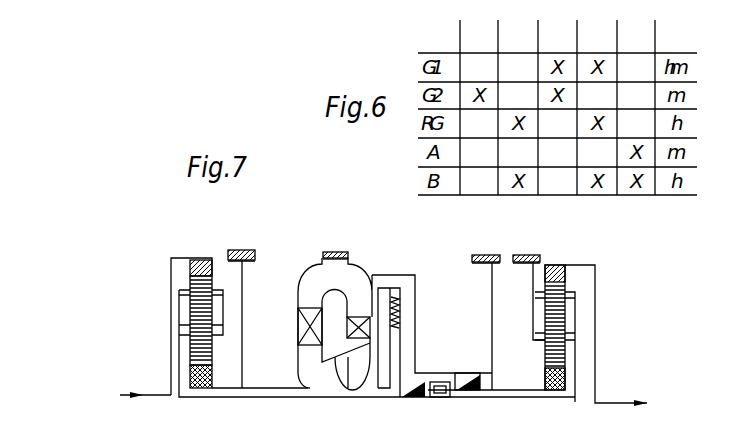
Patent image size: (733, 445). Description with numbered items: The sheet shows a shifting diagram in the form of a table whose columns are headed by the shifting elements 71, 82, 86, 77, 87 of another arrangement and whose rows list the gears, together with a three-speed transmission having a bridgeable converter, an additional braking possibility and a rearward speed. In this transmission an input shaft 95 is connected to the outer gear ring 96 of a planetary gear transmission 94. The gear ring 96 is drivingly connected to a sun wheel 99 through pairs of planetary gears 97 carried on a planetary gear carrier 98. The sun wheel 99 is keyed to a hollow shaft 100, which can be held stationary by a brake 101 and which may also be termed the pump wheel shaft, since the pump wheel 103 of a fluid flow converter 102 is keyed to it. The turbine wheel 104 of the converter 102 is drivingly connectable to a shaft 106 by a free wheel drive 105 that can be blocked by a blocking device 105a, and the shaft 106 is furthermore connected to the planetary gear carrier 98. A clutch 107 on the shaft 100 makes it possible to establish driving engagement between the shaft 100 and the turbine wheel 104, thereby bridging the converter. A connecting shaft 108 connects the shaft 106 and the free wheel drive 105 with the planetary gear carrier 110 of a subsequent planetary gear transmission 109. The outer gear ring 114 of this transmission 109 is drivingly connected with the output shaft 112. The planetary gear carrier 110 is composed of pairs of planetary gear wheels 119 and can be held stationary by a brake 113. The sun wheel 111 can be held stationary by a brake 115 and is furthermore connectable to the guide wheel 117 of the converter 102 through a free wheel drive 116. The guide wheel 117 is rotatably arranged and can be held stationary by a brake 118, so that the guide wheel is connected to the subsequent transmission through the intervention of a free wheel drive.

In FIG. 6, the clutch 71 is at (479, 36).
In FIG. 6, the brake 82 is at (518, 36).
In FIG. 6, the clutch 86 is at (557, 36).
In FIG. 6, the clutch 77 is at (597, 36).
In FIG. 6, the brake 87 is at (636, 36).
In FIG. 7, the planetary gear transmission 94 is at (194, 250).
In FIG. 7, the input shaft 95 is at (160, 393).
In FIG. 7, the outer gear ring 96 is at (192, 268).
In FIG. 7, the planetary gears 97 is at (190, 330).
In FIG. 7, the planetary gear carrier 98 is at (190, 336).
In FIG. 7, the sun wheel 99 is at (200, 388).
In FIG. 7, the hollow shaft 100 is at (280, 397).
In FIG. 7, the brake 101 is at (246, 249).
In FIG. 7, the fluid flow converter 102 is at (366, 262).
In FIG. 7, the pump wheel 103 is at (358, 370).
In FIG. 7, the turbine wheel 104 is at (369, 328).
In FIG. 7, the free wheel drive 105 is at (428, 398).
In FIG. 7, the blocking device 105a is at (448, 392).
In FIG. 7, the shaft 106 is at (394, 398).
In FIG. 7, the clutch 107 is at (398, 310).
In FIG. 7, the connecting shaft 108 is at (528, 398).
In FIG. 7, the subsequent planetary gear transmission 109 is at (550, 255).
In FIG. 7, the planetary gear carrier 110 is at (573, 337).
In FIG. 7, the sun wheel 111 is at (558, 391).
In FIG. 7, the output shaft 112 is at (612, 402).
In FIG. 7, the brake 113 is at (523, 253).
In FIG. 7, the outer gear ring 114 is at (564, 267).
In FIG. 7, the brake 115 is at (480, 253).
In FIG. 7, the free wheel drive 116 is at (466, 372).
In FIG. 7, the guide wheel 117 is at (302, 327).
In FIG. 7, the brake 118 is at (332, 251).
In FIG. 7, the planetary gear wheels 119 is at (556, 323).